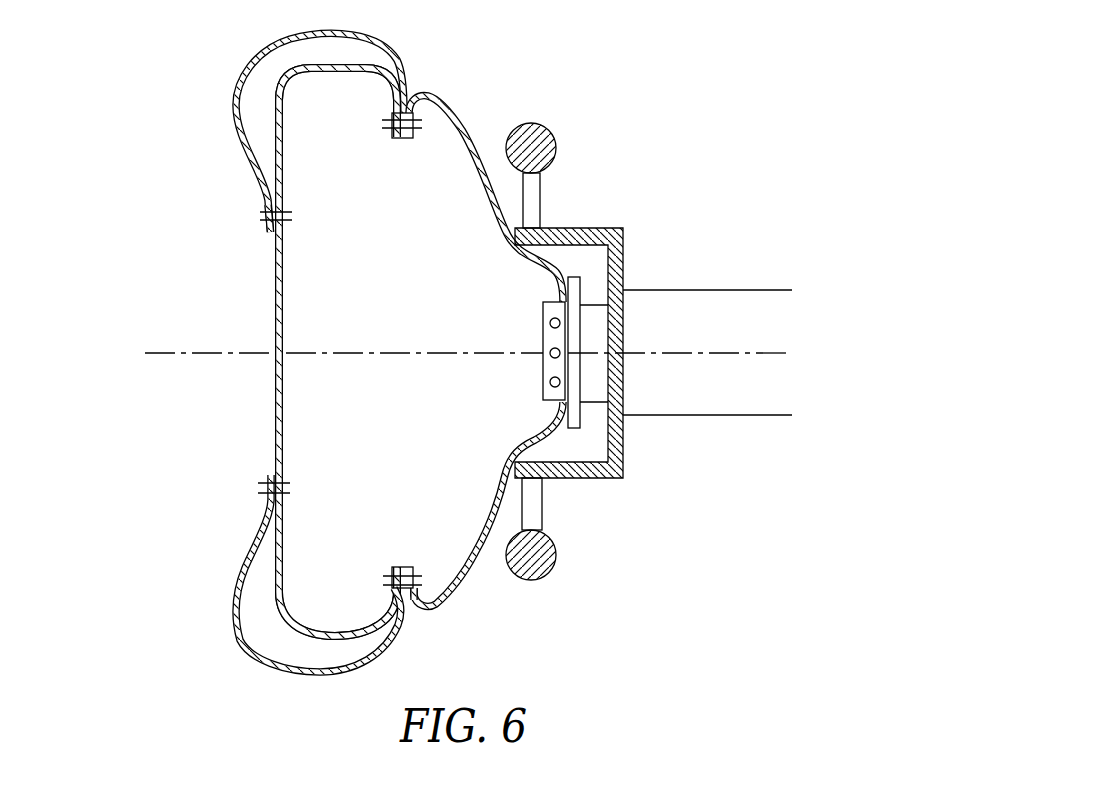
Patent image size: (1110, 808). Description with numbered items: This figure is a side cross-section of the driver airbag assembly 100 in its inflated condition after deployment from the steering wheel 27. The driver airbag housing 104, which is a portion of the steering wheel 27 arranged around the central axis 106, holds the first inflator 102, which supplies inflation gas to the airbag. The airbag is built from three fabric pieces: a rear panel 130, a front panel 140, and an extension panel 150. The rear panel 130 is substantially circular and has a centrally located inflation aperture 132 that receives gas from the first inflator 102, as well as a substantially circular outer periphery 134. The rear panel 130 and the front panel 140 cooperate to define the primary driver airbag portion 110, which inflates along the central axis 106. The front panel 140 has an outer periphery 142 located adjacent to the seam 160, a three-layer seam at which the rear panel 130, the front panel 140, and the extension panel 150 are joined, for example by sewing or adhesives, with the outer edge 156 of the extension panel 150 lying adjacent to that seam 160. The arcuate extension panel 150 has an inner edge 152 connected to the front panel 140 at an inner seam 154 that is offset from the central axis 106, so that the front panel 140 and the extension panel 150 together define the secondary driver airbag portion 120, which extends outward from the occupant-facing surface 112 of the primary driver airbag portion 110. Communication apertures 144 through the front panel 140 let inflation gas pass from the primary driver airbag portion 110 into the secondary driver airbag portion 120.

The steering wheel 27 is at (535, 125).
The driver airbag assembly 100 is at (178, 55).
The first inflator 102 is at (595, 302).
The driver airbag housing 104 is at (614, 230).
The central axis 106 is at (778, 352).
The primary driver airbag portion 110 is at (470, 118).
The occupant-facing surface 112 is at (275, 387).
The secondary driver airbag portion 120 is at (207, 630).
The rear panel 130 is at (490, 503).
The inflation aperture 132 is at (558, 405).
The outer periphery 134 is at (415, 567).
The front panel 140 is at (284, 421).
The outer periphery 142 is at (393, 135).
The communication apertures 144 is at (289, 65).
The extension panel 150 is at (230, 100).
The inner edge 152 is at (268, 232).
The inner seam 154 is at (260, 212).
The outer edge 156 is at (407, 140).
The seam 160 is at (384, 580).